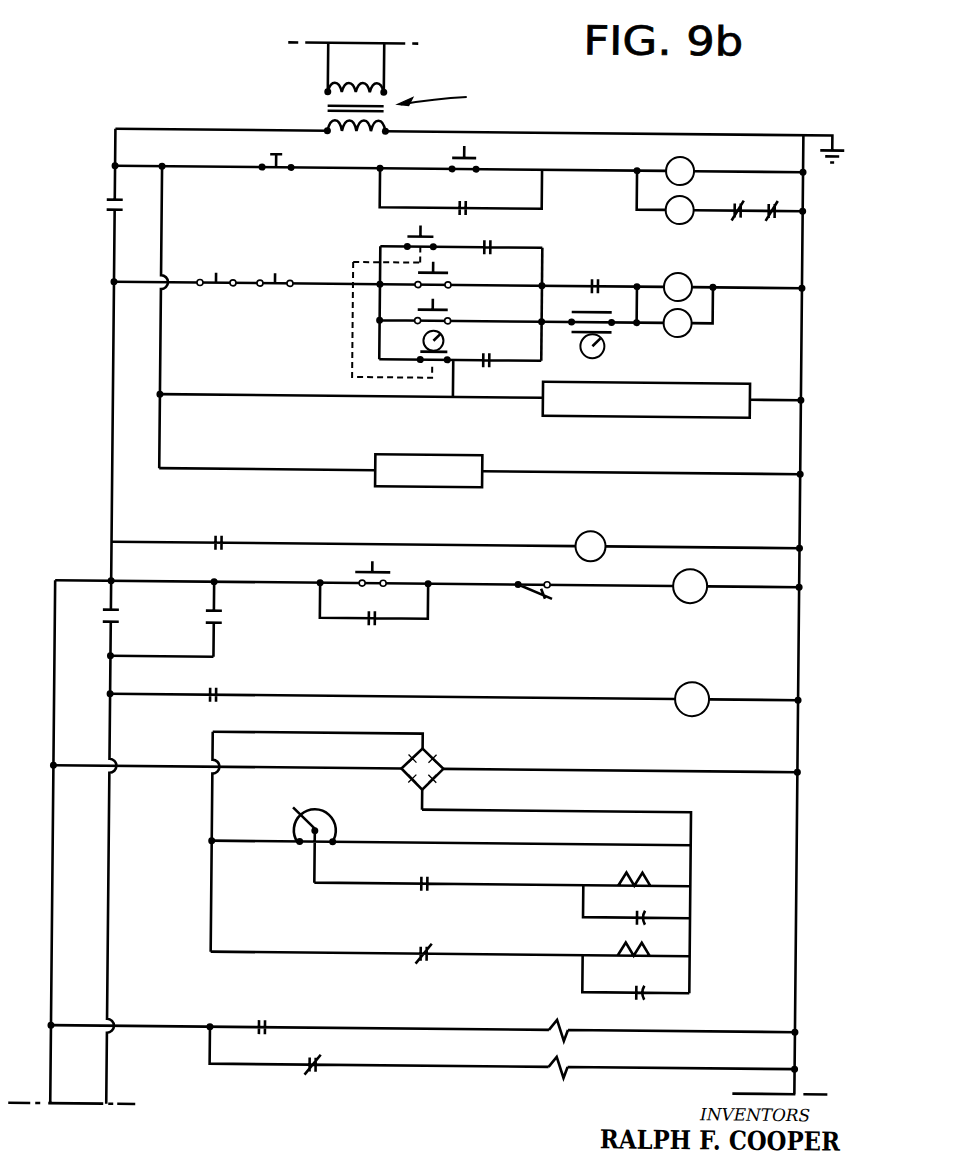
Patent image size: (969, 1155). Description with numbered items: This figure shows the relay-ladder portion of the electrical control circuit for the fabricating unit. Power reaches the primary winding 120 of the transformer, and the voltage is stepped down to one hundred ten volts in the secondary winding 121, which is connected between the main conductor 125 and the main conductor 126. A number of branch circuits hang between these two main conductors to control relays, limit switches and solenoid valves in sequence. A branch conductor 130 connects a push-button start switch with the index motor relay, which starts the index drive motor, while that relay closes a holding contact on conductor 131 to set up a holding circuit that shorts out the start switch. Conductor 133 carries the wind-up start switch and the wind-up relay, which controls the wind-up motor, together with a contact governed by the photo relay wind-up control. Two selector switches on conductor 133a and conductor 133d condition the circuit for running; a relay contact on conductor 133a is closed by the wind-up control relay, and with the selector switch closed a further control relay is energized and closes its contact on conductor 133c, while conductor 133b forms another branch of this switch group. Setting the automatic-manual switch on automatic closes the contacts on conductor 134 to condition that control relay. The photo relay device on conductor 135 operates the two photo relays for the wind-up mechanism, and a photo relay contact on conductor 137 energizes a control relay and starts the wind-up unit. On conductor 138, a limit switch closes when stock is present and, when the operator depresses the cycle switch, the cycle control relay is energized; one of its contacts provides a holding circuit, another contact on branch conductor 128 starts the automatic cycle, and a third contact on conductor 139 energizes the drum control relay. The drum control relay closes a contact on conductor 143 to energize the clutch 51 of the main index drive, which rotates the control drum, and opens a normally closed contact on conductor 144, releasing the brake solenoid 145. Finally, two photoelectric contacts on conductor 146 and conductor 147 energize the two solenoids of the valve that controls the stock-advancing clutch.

The primary winding 120 is at (338, 84).
The secondary winding 121 is at (361, 135).
The main conductor 125 is at (111, 152).
The main conductor 126 is at (799, 505).
The branch conductor 128 is at (112, 736).
The branch conductor 130 is at (571, 154).
The conductor 131 is at (538, 192).
The conductor 133 is at (327, 286).
The conductor 133a is at (376, 247).
The selector switch branch line 133b is at (529, 287).
The conductor 133c is at (463, 306).
The conductor 133d is at (451, 399).
The conductor 134 is at (562, 306).
The conductor 135 is at (283, 397).
The conductor 137 is at (298, 524).
The conductor 138 is at (298, 560).
The conductor 139 is at (283, 699).
The conductor 143 is at (317, 870).
The conductor 144 is at (316, 954).
The brake solenoid 145 is at (646, 962).
The conductor 146 is at (446, 1029).
The conductor 147 is at (352, 1068).
The clutch 51 is at (640, 889).